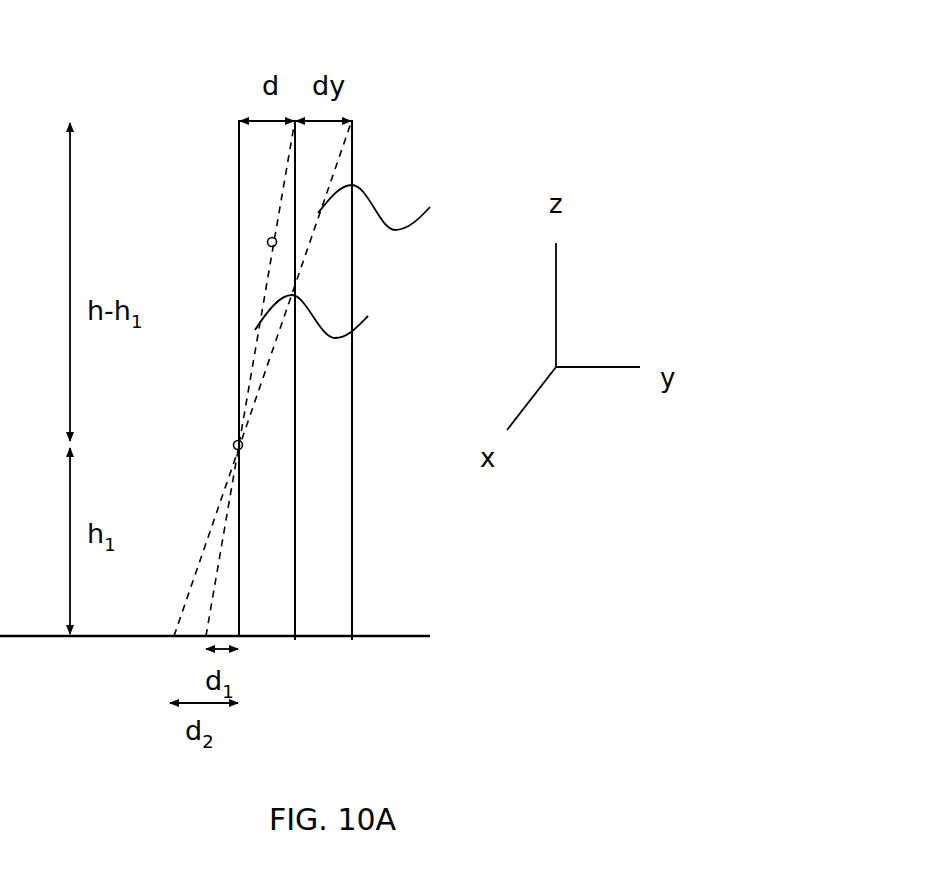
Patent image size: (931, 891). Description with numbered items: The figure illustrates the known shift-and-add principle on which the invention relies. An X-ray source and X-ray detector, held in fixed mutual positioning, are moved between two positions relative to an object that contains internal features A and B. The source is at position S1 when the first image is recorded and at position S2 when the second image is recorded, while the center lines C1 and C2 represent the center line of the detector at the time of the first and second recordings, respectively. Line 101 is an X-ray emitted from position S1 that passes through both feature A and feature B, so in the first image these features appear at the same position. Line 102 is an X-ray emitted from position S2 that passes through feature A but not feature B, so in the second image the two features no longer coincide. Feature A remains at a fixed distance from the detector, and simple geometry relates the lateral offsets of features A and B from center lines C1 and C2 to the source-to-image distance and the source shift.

The line 101 is at (352, 316).
The line 102 is at (413, 201).
The feature A is at (219, 448).
The feature B is at (264, 225).
The position of the X-ray source S1 is at (299, 330).
The position of the X-ray source S2 is at (352, 330).
The center line C1 is at (297, 669).
The center line C2 is at (350, 669).